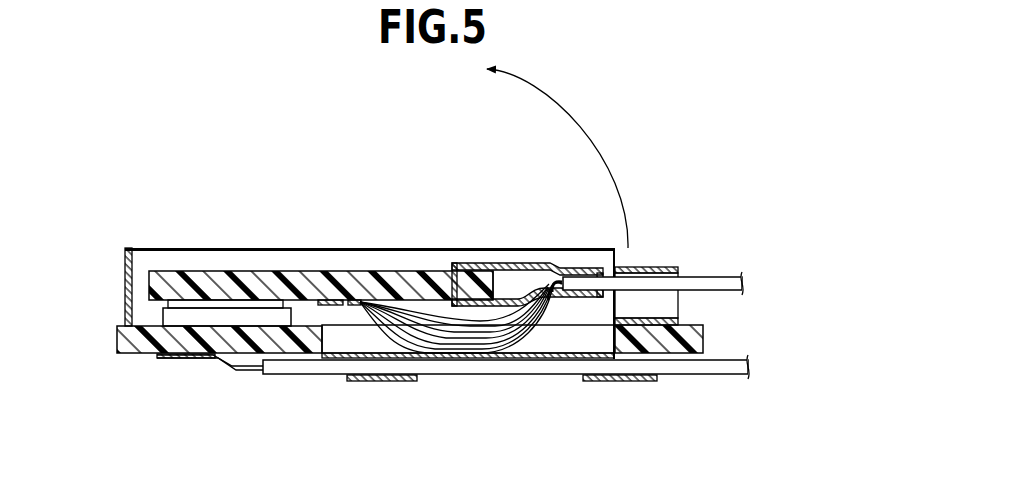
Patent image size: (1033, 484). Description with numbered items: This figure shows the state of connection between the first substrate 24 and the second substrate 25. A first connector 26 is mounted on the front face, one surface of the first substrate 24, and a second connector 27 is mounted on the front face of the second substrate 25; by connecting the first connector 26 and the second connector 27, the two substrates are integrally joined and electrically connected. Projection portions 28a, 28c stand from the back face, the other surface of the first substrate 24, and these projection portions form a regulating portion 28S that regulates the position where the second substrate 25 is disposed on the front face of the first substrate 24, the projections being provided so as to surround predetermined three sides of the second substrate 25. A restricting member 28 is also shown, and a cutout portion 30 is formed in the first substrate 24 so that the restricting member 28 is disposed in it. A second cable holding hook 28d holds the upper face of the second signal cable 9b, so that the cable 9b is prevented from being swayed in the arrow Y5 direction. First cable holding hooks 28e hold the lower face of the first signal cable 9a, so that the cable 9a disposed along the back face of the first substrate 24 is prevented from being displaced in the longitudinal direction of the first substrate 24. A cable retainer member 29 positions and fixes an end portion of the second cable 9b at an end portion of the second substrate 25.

The first signal cable 9a is at (718, 368).
The second signal cable 9b is at (713, 276).
The first substrate 24 is at (300, 345).
The second substrate 25 is at (316, 284).
The first connector 26 is at (236, 318).
The second connector 27 is at (228, 304).
The restricting member 28 is at (368, 243).
The projection portion 28a is at (417, 248).
The projection portion 28c is at (124, 297).
The second cable holding hook 28d is at (641, 268).
The first cable holding hooks 28e is at (378, 382).
The regulating portion 28S is at (551, 320).
The cable retainer member 29 is at (527, 263).
The cutout portion 30 is at (340, 346).
The arrow Y5 direction Y5 is at (579, 124).